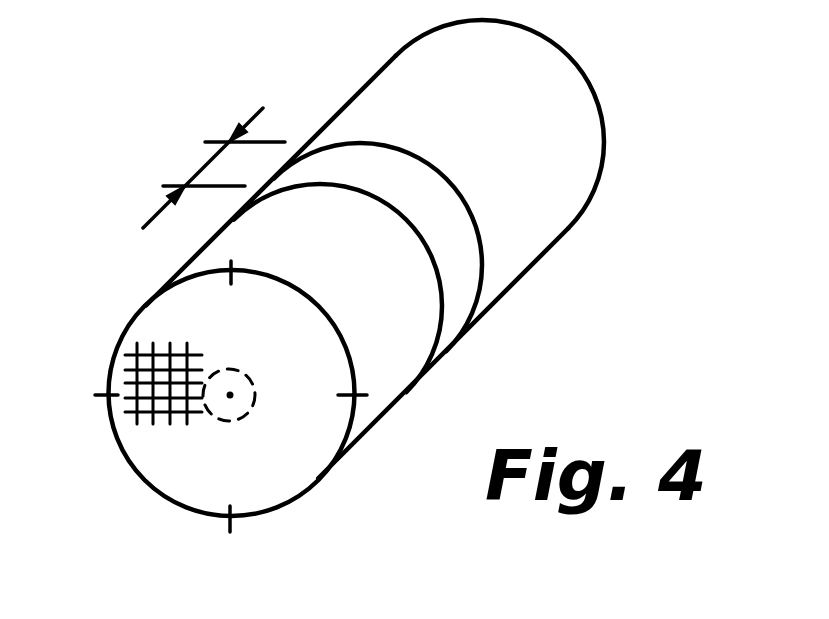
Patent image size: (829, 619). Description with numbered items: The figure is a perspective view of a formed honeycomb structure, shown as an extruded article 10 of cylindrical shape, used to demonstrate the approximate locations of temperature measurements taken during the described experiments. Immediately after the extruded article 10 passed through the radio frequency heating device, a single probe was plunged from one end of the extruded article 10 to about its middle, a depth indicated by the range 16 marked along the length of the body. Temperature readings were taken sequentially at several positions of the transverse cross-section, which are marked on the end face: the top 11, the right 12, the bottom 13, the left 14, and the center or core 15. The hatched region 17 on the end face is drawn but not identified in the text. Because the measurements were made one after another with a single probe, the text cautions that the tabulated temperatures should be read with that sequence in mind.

The extruded article 10 is at (386, 68).
The top position 11 is at (232, 270).
The right position 12 is at (354, 393).
The bottom position 13 is at (230, 520).
The left position 14 is at (108, 395).
The center or core position 15 is at (230, 395).
The range 16 is at (201, 170).
The grid pattern 17 is at (163, 383).